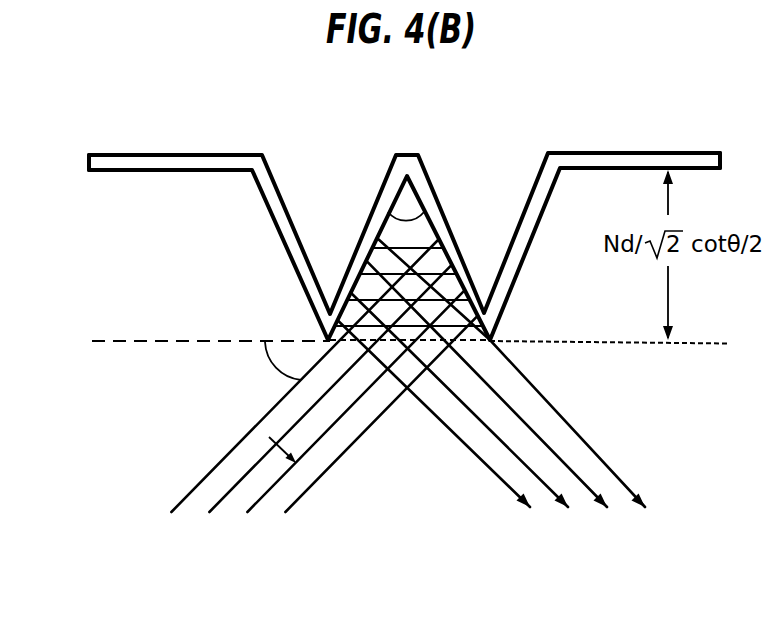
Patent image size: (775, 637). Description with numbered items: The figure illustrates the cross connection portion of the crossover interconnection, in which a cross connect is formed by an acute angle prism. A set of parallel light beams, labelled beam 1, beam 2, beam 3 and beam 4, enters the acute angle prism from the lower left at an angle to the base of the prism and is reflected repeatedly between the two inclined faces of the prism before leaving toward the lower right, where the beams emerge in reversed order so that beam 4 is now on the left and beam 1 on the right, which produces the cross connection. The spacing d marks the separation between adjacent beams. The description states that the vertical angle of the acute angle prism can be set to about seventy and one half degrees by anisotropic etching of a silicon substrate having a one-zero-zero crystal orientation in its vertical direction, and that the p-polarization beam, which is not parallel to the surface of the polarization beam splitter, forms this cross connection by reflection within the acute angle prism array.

The light ray 1 is at (407, 392).
The light ray 2 is at (407, 404).
The light ray 3 is at (407, 418).
The light ray 4 is at (407, 431).
The ray spacing d is at (313, 487).